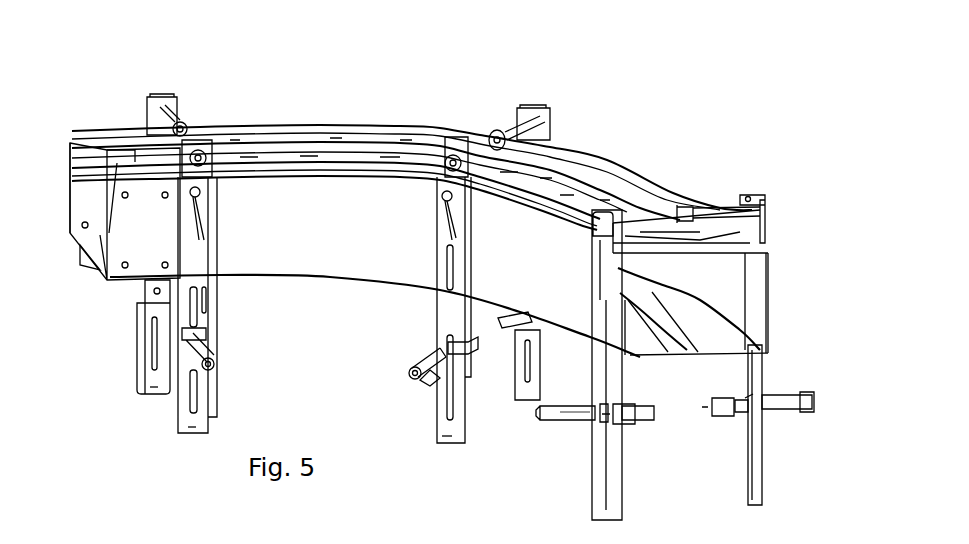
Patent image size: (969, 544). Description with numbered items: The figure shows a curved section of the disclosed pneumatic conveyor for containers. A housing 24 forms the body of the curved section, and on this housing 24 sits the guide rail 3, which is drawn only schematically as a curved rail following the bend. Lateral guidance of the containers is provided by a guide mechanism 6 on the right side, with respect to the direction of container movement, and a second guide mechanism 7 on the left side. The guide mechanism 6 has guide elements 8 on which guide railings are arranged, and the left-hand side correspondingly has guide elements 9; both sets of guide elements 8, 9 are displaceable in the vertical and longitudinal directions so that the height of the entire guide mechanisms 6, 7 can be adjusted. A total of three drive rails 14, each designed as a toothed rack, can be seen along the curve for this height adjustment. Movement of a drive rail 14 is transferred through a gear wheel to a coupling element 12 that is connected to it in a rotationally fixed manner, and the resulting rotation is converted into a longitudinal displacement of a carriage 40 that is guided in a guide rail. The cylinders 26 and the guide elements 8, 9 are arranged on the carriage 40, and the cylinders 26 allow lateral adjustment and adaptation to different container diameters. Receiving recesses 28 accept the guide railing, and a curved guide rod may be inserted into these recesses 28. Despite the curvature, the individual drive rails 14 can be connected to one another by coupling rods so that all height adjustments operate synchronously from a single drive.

The guide rail 3 is at (690, 335).
The guide mechanism 6 is at (567, 450).
The guide mechanism 7 is at (783, 435).
The guide element 8 is at (625, 418).
The guide element 9 is at (755, 440).
The coupling element 12 is at (165, 118).
The drive rail 14 is at (688, 207).
The housing 24 is at (325, 200).
The cylinder 26 is at (438, 378).
The receiving recess 28 is at (518, 312).
The carriage 40 is at (208, 332).